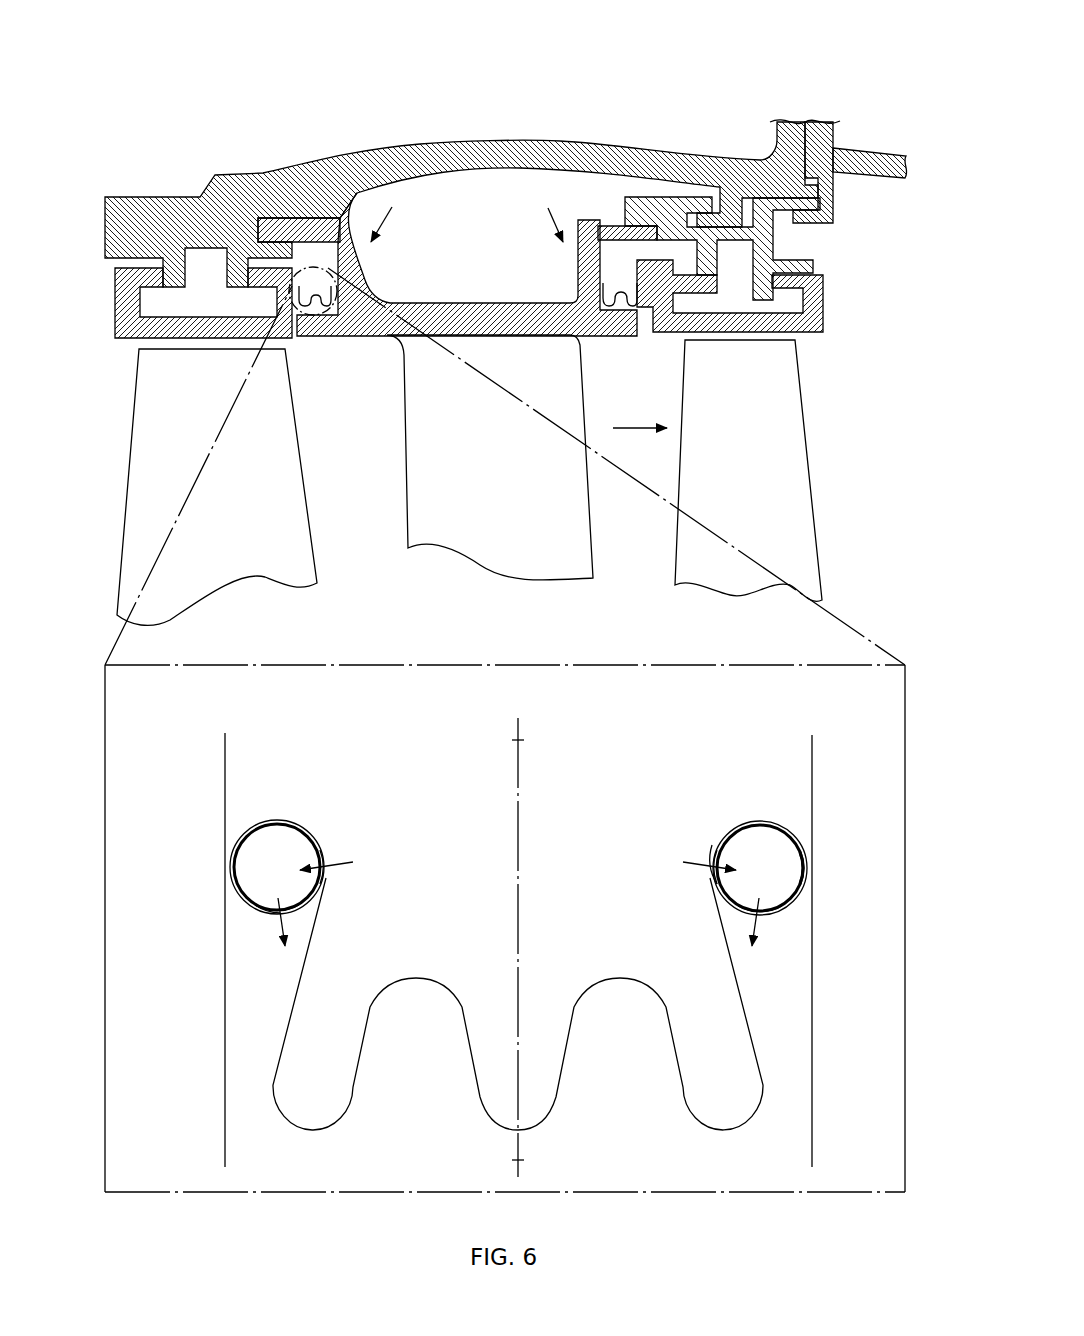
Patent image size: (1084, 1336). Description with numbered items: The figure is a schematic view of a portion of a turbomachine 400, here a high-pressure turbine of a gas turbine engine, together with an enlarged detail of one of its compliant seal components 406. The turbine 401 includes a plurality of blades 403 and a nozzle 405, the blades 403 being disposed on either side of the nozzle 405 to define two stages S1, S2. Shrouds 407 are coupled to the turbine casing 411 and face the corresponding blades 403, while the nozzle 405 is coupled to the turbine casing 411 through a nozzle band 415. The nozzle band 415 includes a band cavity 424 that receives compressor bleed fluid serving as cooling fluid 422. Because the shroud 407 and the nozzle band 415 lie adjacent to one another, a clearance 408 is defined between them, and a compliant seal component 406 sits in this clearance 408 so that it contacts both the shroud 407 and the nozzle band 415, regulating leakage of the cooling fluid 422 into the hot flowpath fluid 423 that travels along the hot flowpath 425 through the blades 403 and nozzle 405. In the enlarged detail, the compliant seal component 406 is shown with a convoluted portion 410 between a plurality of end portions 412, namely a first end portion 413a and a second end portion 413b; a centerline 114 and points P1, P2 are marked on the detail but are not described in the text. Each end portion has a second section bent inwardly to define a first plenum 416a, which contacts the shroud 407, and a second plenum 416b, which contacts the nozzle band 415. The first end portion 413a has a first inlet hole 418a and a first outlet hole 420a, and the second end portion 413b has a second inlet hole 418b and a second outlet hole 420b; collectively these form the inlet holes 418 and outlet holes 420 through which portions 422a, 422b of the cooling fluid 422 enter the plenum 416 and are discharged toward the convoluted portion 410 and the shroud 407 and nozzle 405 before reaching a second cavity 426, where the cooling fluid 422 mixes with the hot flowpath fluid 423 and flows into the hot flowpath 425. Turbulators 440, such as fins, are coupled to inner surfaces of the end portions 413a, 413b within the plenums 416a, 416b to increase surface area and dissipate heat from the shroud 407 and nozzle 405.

The turbomachine 400 is at (200, 38).
The turbine 401 is at (125, 413).
The blades 403 is at (212, 410).
The nozzle 405 is at (515, 482).
The compliant seal component 406 is at (333, 278).
The shroud 407 is at (120, 312).
The clearance 408 is at (310, 345).
The convoluted portion 410 is at (485, 1118).
The turbine casing 411 is at (536, 142).
The end portions 412 is at (320, 834).
The first end portion 413a is at (252, 922).
The second end portion 413b is at (785, 918).
The nozzle band 415 is at (468, 303).
The plenum 416 is at (782, 883).
The first plenum 416a is at (302, 864).
The second plenum 416b is at (785, 864).
The inlet holes 418 is at (700, 848).
The first inlet hole 418a is at (335, 862).
The second inlet hole 418b is at (712, 862).
The outlet holes 420 is at (268, 928).
The first outlet hole 420a is at (290, 912).
The second outlet hole 420b is at (738, 915).
The cooling fluid 422 is at (507, 217).
The first portion of cooling fluid 422a is at (350, 867).
The second portion of cooling fluid 422b is at (690, 870).
The hot flowpath fluid 423 is at (620, 420).
The band cavity 424 is at (607, 200).
The hot flowpath 425 is at (372, 439).
The second cavity 426 is at (330, 334).
The turbulators 440 is at (231, 850).
The centerline 114 is at (518, 790).
The first stage S1 is at (104, 284).
The second stage S2 is at (850, 287).
The first point P1 is at (505, 720).
The second point P2 is at (505, 1159).